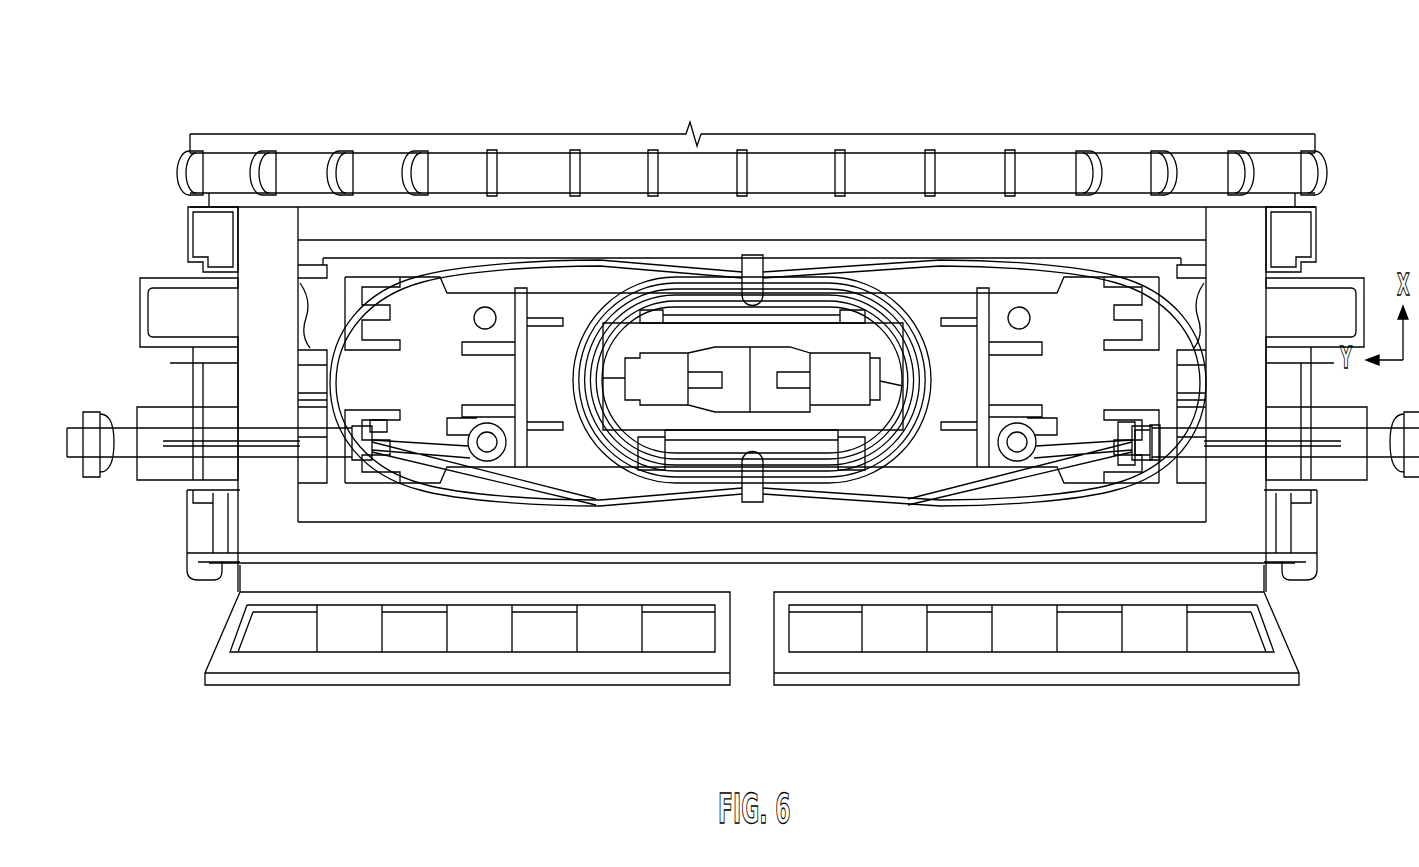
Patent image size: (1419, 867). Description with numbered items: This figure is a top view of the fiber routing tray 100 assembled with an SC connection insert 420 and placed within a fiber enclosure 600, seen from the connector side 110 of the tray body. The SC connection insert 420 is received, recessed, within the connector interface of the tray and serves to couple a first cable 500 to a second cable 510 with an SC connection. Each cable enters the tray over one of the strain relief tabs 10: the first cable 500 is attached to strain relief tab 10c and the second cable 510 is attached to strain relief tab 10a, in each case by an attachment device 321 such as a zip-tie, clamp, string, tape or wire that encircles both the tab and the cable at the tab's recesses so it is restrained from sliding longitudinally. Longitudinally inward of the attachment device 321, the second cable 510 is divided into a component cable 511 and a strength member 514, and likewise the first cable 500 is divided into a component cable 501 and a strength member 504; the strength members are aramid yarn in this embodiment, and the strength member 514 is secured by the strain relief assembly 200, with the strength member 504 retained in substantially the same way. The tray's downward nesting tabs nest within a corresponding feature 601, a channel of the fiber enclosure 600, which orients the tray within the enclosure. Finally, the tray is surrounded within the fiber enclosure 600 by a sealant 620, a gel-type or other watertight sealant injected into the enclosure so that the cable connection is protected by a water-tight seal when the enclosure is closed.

The strain relief tab 10 is at (1127, 427).
The strain relief tab 10a is at (1126, 465).
The strain relief tab 10c is at (378, 420).
The fiber routing tray 100 is at (1070, 256).
The connector side 110 is at (1220, 288).
The strain relief assembly 200 is at (1050, 413).
The attachment device 321 is at (1157, 432).
The SC connection insert 420 is at (790, 398).
The first cable 500 is at (257, 442).
The component cable 501 is at (503, 480).
The strength member 504 is at (433, 437).
The second cable 510 is at (1330, 448).
The component cable 511 is at (1010, 470).
The strength member 514 is at (1058, 432).
The fiber enclosure 600 is at (1203, 667).
The corresponding feature 601 is at (312, 270).
The sealant 620 is at (1223, 533).